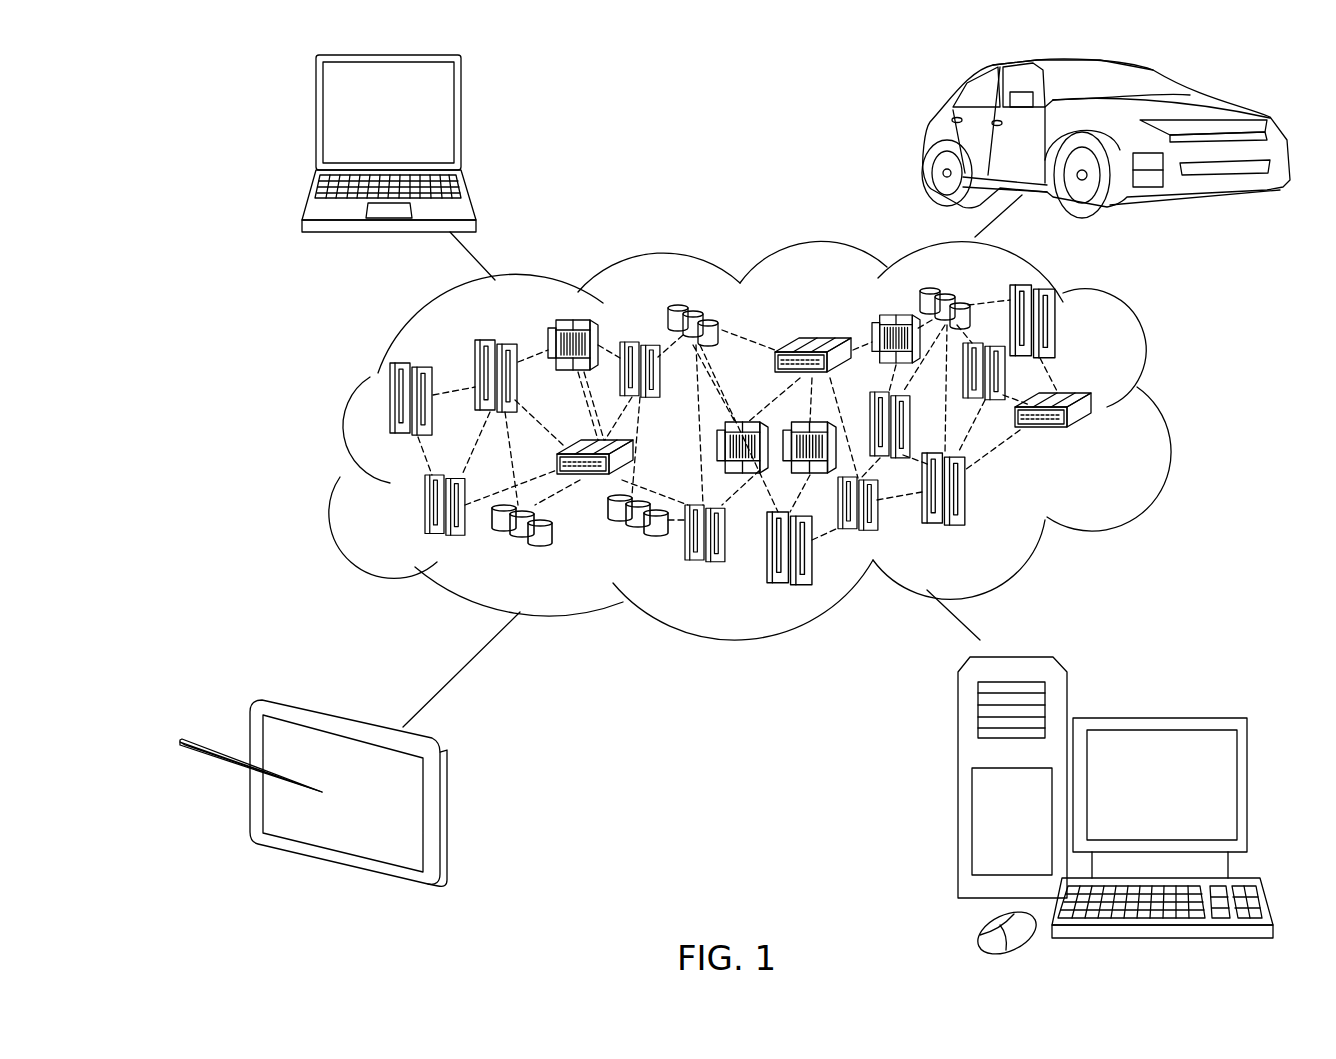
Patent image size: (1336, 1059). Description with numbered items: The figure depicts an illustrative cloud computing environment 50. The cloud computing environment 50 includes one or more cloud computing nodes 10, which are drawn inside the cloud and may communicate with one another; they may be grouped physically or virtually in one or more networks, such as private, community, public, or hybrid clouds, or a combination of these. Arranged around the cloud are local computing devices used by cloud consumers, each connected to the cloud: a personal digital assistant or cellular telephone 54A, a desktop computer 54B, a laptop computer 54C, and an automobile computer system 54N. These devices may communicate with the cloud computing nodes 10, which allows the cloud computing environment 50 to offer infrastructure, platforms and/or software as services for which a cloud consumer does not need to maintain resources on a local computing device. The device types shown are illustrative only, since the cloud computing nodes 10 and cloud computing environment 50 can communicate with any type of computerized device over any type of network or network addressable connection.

The cloud computing node 10 is at (1105, 447).
The cloud computing environment 50 is at (1160, 412).
The personal digital assistant or cellular telephone 54A is at (447, 817).
The desktop computer 54B is at (1158, 717).
The laptop computer 54C is at (460, 122).
The automobile computer system 54N is at (924, 138).